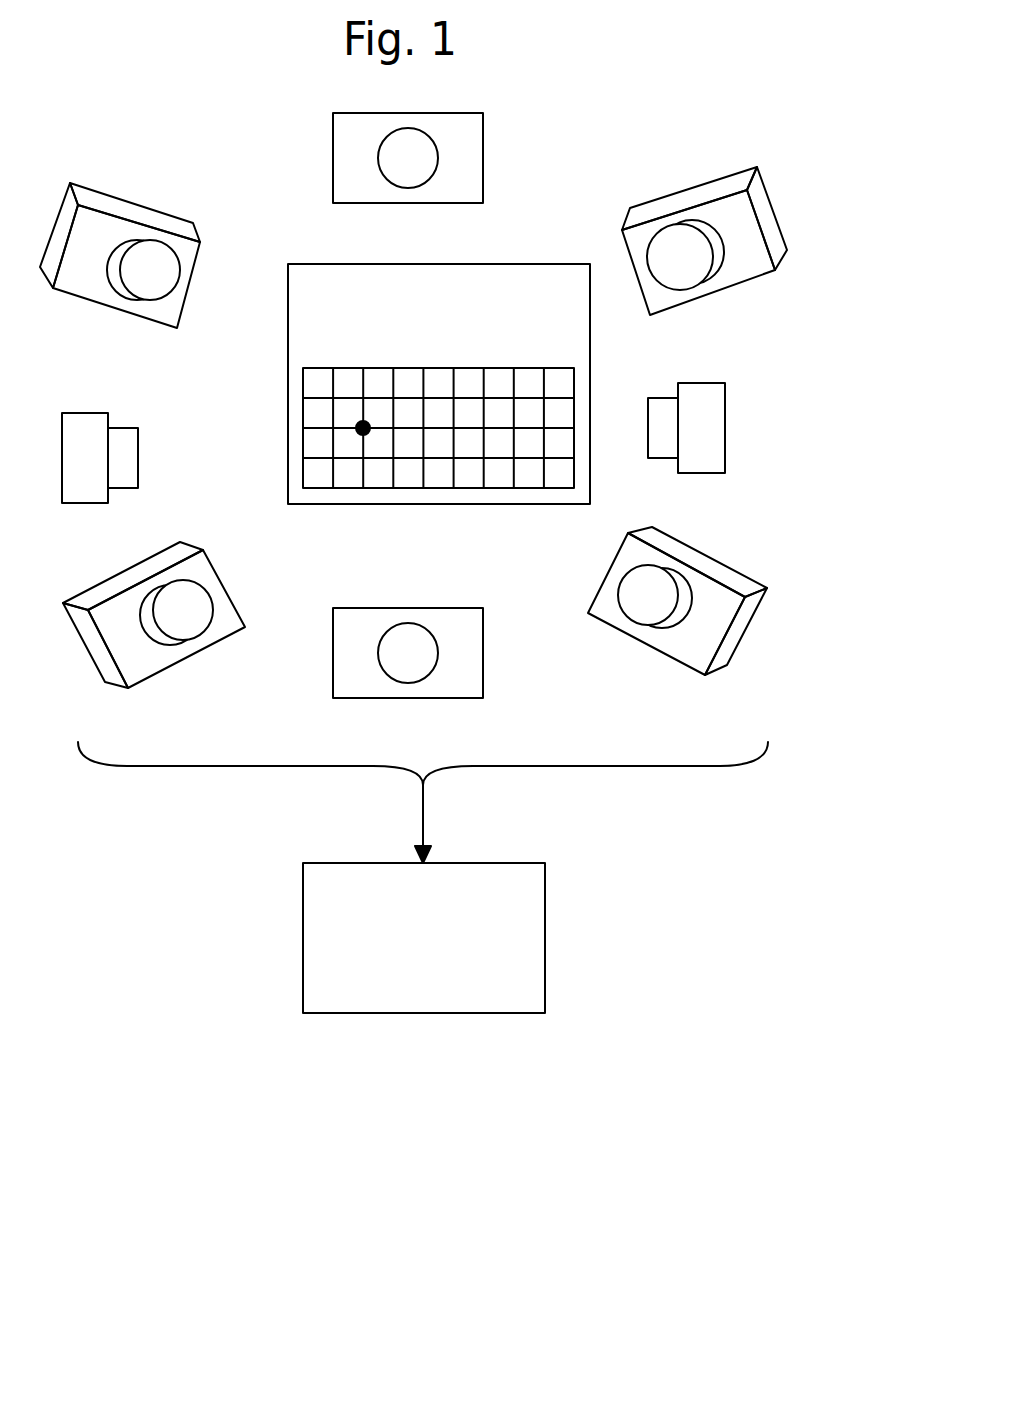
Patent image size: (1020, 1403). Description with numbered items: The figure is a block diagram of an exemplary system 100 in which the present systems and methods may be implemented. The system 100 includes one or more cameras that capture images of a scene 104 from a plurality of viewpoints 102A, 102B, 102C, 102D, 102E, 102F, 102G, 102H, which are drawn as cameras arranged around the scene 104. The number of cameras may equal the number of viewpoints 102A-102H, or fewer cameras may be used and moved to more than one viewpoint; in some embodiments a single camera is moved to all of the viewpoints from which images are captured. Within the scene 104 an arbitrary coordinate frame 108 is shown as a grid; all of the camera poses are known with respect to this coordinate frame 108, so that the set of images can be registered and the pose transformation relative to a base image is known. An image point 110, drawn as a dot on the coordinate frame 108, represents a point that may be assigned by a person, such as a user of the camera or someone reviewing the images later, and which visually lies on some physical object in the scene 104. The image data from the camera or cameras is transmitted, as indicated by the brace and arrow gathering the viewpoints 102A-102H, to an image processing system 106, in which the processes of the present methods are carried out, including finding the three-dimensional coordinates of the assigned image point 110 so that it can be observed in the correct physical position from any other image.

The system 100 is at (815, 1251).
The viewpoint 102A is at (464, 153).
The viewpoint 102B is at (742, 222).
The viewpoint 102C is at (735, 407).
The viewpoint 102D is at (696, 592).
The viewpoint 102E is at (441, 633).
The viewpoint 102F is at (194, 605).
The viewpoint 102G is at (158, 453).
The viewpoint 102H is at (176, 255).
The scene 104 is at (439, 384).
The image processing system 106 is at (424, 938).
The coordinate frame 108 is at (491, 413).
The image point 110 is at (292, 396).